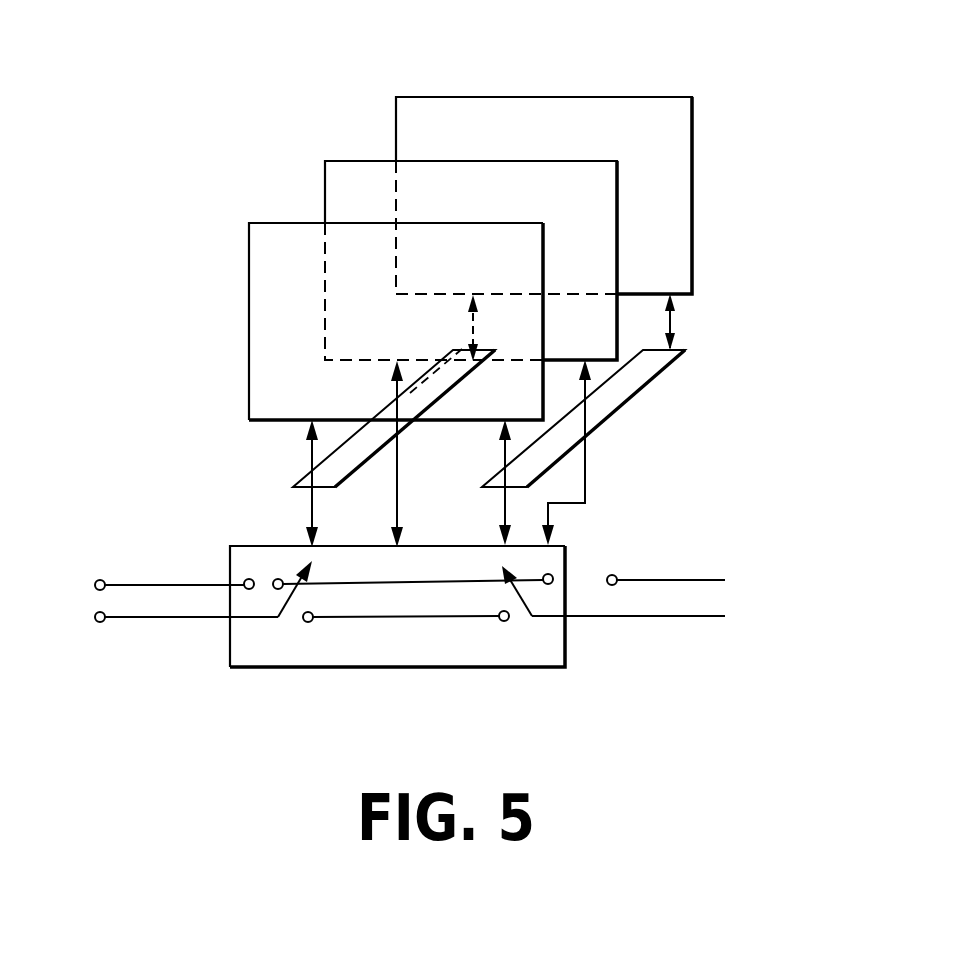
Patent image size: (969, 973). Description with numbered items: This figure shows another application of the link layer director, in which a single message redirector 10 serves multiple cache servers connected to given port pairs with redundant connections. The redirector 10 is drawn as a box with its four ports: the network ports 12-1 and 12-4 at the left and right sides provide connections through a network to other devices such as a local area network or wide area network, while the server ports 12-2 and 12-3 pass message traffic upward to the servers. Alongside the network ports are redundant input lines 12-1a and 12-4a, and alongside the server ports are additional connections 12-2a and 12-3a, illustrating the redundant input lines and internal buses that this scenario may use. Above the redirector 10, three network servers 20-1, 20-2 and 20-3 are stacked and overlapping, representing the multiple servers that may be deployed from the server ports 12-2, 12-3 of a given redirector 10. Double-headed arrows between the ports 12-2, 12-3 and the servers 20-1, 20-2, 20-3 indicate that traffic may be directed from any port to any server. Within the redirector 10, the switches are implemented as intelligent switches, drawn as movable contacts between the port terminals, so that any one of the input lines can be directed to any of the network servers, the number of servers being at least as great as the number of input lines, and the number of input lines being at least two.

The message redirector 10 is at (512, 668).
The network port 12-1 is at (167, 582).
The input port 12-1a is at (168, 618).
The server port 12-2 is at (312, 503).
The mirror plate 12-2a is at (398, 490).
The server port 12-3 is at (505, 503).
The mirror plate 12-3a is at (587, 473).
The network port 12-4 is at (692, 580).
The output port 12-4a is at (693, 614).
The network server 20-1 is at (278, 223).
The network server 20-2 is at (357, 162).
The network server 20-3 is at (495, 97).